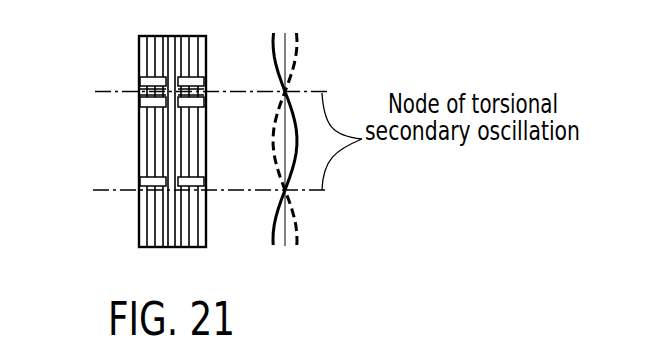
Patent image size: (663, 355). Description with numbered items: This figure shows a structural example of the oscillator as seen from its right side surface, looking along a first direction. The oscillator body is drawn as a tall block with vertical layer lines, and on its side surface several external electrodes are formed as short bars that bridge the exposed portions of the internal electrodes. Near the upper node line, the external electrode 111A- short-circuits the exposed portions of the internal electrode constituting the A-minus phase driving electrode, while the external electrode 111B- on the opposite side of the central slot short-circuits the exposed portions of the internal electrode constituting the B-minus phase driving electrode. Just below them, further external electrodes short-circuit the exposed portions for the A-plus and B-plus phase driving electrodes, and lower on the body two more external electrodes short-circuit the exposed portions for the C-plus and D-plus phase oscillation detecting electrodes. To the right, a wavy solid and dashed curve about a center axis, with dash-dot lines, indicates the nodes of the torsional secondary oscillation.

The external electrode 111A- is at (140, 81).
The external electrode 111B- is at (205, 79).